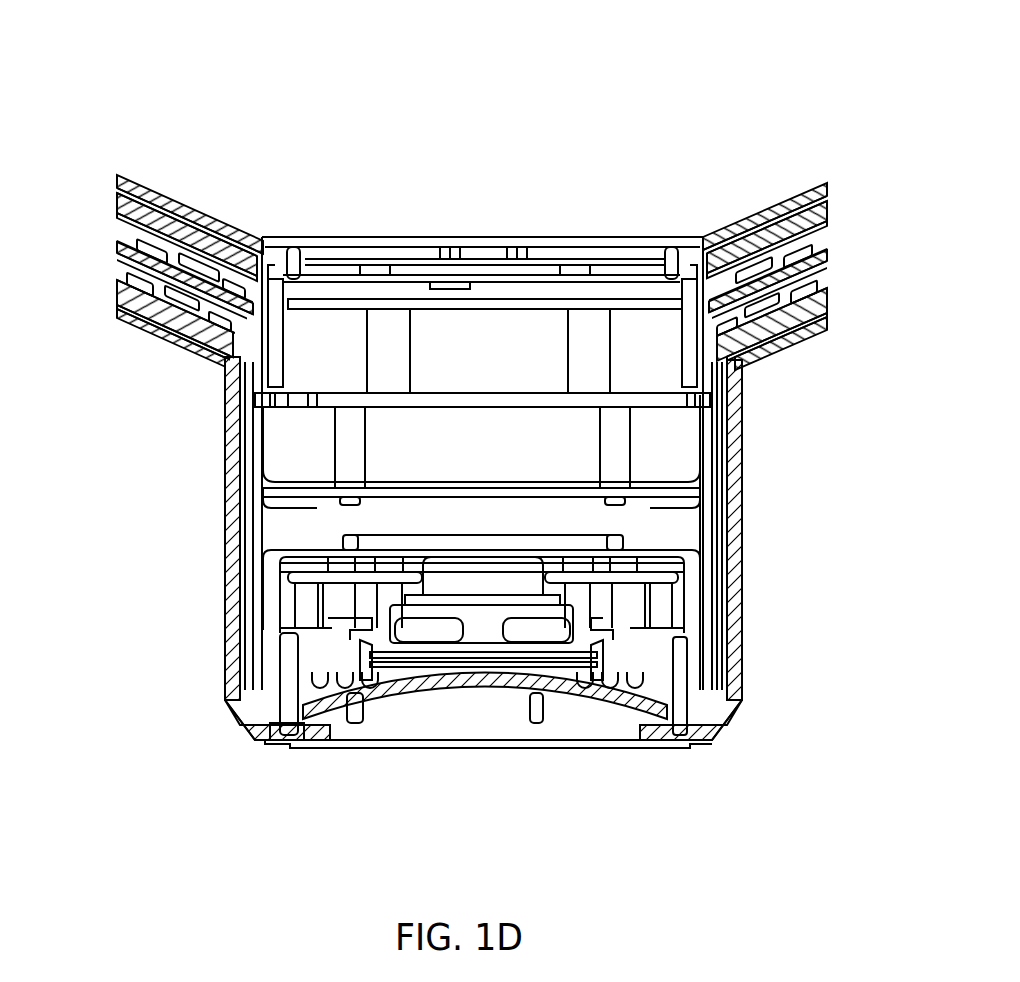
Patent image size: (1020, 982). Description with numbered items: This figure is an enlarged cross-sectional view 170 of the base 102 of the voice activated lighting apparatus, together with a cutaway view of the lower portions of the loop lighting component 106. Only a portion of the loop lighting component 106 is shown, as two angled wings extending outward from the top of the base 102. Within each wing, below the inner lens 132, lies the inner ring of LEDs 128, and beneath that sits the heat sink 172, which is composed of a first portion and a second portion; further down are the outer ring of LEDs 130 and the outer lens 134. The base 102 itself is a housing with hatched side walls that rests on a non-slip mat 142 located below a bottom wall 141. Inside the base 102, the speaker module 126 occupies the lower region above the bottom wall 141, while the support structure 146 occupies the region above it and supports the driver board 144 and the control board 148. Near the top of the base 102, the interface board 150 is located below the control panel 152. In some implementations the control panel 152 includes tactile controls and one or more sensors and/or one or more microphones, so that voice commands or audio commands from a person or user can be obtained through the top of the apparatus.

The base 102 is at (180, 549).
The loop lighting component 106 is at (150, 181).
The speaker module 126 is at (650, 657).
The inner ring of LEDs 128 is at (115, 222).
The outer ring of LEDs 130 is at (198, 345).
The inner lens 132 is at (233, 224).
The outer lens 134 is at (137, 325).
The bottom wall 141 is at (283, 737).
The non-slip mat 142 is at (600, 745).
The driver board 144 is at (687, 493).
The support structure 146 is at (319, 468).
The control board 148 is at (528, 303).
The interface board 150 is at (560, 265).
The control panel 152 is at (492, 237).
The cross-sectional view 170 is at (664, 56).
The heat sink 172 is at (190, 265).